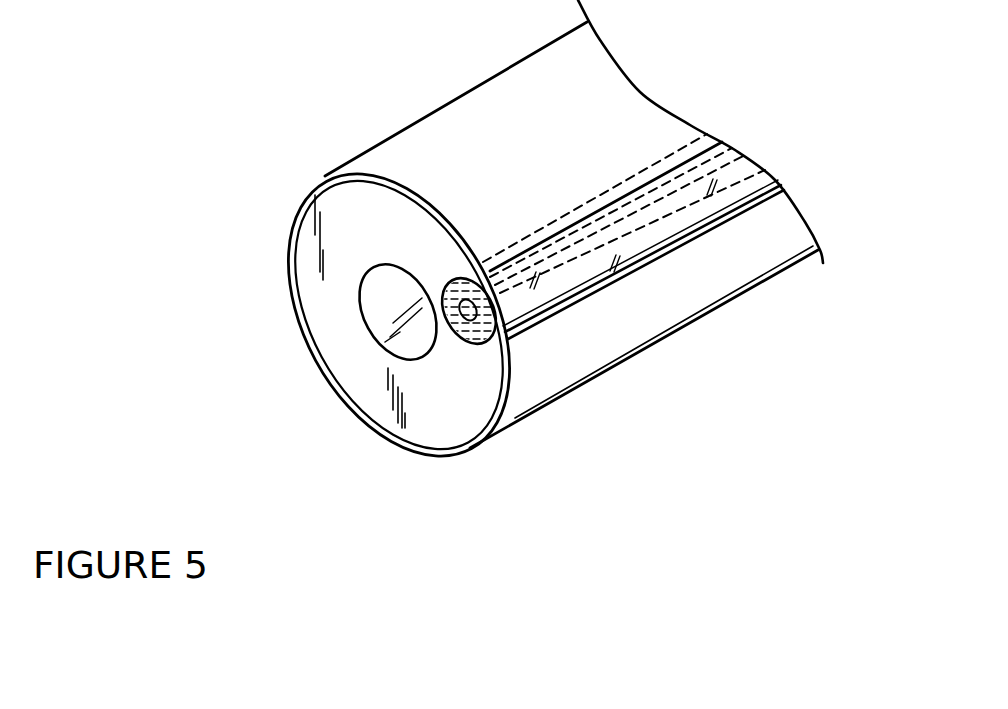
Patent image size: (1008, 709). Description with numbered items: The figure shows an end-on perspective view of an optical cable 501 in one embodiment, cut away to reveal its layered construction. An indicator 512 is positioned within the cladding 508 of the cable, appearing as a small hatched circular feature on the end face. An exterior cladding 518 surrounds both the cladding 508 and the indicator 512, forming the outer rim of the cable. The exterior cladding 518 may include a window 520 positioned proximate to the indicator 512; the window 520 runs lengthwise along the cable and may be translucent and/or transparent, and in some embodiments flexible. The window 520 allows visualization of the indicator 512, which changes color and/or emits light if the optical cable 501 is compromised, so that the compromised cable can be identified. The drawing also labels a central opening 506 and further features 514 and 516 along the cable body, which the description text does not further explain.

The optical cable 501 is at (437, 107).
The central lumen 506 is at (375, 313).
The cladding 508 is at (365, 386).
The indicator 512 is at (455, 290).
The outer wall 514 is at (490, 407).
The longitudinal groove 516 is at (478, 313).
The exterior cladding 518 is at (457, 455).
The window 520 is at (750, 177).